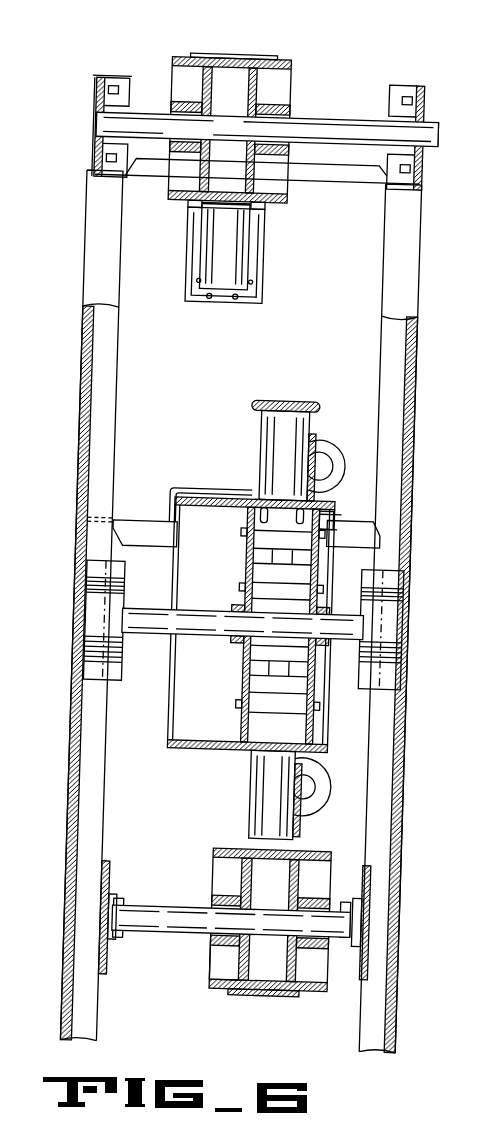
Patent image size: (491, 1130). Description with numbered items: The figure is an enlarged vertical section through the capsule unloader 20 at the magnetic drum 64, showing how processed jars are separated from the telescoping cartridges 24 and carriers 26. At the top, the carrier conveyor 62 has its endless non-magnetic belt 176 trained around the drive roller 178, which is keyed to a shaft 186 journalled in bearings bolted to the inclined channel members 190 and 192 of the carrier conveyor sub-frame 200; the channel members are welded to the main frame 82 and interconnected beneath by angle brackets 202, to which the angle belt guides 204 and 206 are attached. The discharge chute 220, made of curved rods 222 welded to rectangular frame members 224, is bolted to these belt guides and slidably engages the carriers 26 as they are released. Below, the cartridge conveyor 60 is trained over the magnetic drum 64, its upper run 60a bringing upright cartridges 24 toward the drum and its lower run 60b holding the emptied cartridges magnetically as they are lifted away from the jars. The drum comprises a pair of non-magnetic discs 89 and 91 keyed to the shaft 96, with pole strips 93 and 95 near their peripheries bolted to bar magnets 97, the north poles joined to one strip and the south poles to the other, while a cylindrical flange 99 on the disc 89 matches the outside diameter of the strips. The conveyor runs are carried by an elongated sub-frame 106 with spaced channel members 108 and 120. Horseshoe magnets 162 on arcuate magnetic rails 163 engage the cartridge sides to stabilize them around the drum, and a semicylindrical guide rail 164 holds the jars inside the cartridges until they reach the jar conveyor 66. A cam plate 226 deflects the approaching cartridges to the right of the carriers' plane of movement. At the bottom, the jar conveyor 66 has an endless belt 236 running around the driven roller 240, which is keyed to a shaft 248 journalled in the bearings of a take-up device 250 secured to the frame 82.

The capsule unloader 20 is at (452, 120).
The cartridge 24 is at (262, 428).
The carrier 26 is at (215, 270).
The cartridge conveyor 60 is at (243, 604).
The upper run 60a is at (239, 493).
The lower run 60b is at (186, 752).
The carrier conveyor 62 is at (242, 134).
The magnetic drum 64 is at (173, 704).
The jar conveyor 66 is at (253, 919).
The frame 82 is at (412, 789).
The non-magnetic disc 89 is at (248, 585).
The non-magnetic disc 91 is at (314, 563).
The pole strip 93 is at (252, 510).
The pole strip 95 is at (330, 516).
The shaft 96 is at (204, 626).
The bar magnets 97 is at (271, 519).
The cylindrical flange 99 is at (258, 523).
The sub-frame 106 is at (95, 526).
The channel member 108 is at (93, 535).
The channel member 120 is at (405, 546).
The horseshoe magnets 162 is at (346, 471).
The arcuate magnetic rails 163 is at (321, 450).
The semicylindrical guide rail 164 is at (306, 404).
The endless non-magnetic belt 176 is at (196, 56).
The drive roller 178 is at (288, 76).
The shaft 186 is at (313, 124).
The channel member 190 is at (111, 79).
The channel member 192 is at (402, 74).
The carrier conveyor sub-frame 200 is at (94, 87).
The angle brackets 202 is at (333, 178).
The angle belt guide 204 is at (196, 207).
The angle belt guide 206 is at (268, 210).
The discharge chute 220 is at (249, 271).
The curved rods 222 is at (195, 300).
The frame members 224 is at (266, 248).
The cam plate 226 is at (186, 492).
The endless belt 236 is at (310, 995).
The driven roller 240 is at (214, 975).
The shaft 248 is at (178, 921).
The take-up device 250 is at (118, 873).